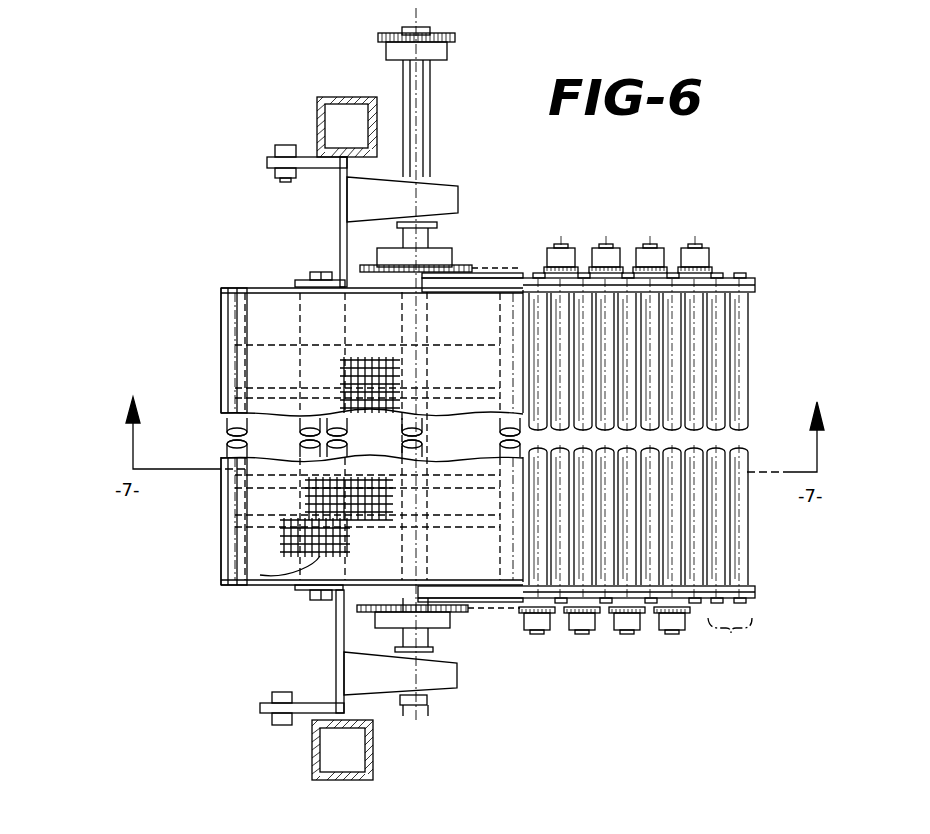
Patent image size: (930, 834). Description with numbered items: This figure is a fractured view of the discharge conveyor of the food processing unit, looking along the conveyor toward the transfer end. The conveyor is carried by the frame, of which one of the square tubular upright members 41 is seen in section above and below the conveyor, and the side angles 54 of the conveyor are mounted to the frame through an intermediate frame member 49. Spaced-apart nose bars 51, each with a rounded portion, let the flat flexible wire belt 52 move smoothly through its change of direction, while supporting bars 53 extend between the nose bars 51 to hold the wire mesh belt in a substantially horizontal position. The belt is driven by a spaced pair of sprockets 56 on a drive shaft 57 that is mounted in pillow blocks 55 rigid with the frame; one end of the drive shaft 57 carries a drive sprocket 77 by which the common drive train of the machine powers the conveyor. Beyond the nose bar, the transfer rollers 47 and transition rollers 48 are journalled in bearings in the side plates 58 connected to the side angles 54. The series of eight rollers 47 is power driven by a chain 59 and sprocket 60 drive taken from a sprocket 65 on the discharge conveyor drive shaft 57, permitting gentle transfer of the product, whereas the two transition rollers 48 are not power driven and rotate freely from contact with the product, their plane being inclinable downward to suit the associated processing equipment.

The upright member 41 is at (335, 97).
The transfer rollers 47 is at (700, 633).
The transition rollers 48 is at (730, 641).
The intermediate frame member 49 is at (340, 213).
The nose bar 51 is at (252, 300).
The wire belt 52 is at (318, 565).
The supporting bars 53 is at (436, 408).
The side angles 54 is at (277, 288).
The pillow block 55 is at (447, 194).
The sprockets 56 is at (445, 370).
The drive shaft 57 is at (422, 30).
The side plates 58 is at (755, 287).
The chain 59 is at (522, 272).
The sprocket 60 is at (672, 258).
The sprocket 65 is at (442, 256).
The drive sprocket 77 is at (448, 50).